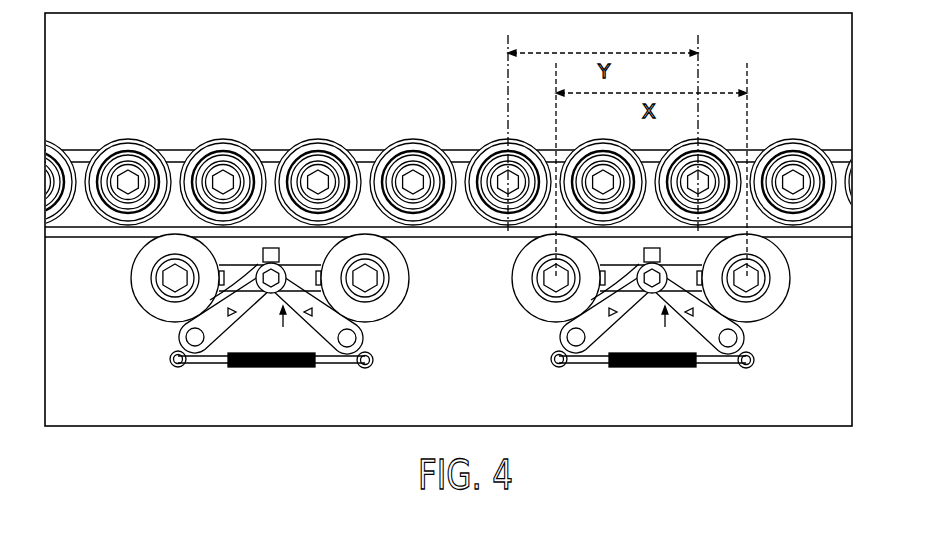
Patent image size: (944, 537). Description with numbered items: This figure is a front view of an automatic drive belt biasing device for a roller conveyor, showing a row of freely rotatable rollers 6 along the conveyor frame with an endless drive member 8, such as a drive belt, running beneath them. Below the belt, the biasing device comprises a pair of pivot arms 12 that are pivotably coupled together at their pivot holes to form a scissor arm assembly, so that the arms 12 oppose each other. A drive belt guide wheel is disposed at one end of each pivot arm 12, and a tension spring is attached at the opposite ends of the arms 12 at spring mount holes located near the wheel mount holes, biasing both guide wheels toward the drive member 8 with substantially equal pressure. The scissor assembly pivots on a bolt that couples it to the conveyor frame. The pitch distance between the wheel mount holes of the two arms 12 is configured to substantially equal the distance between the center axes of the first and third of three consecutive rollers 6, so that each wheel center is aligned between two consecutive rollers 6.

The roller 6 is at (147, 140).
The endless drive member 8 is at (458, 238).
The pivot arm 12 is at (652, 338).